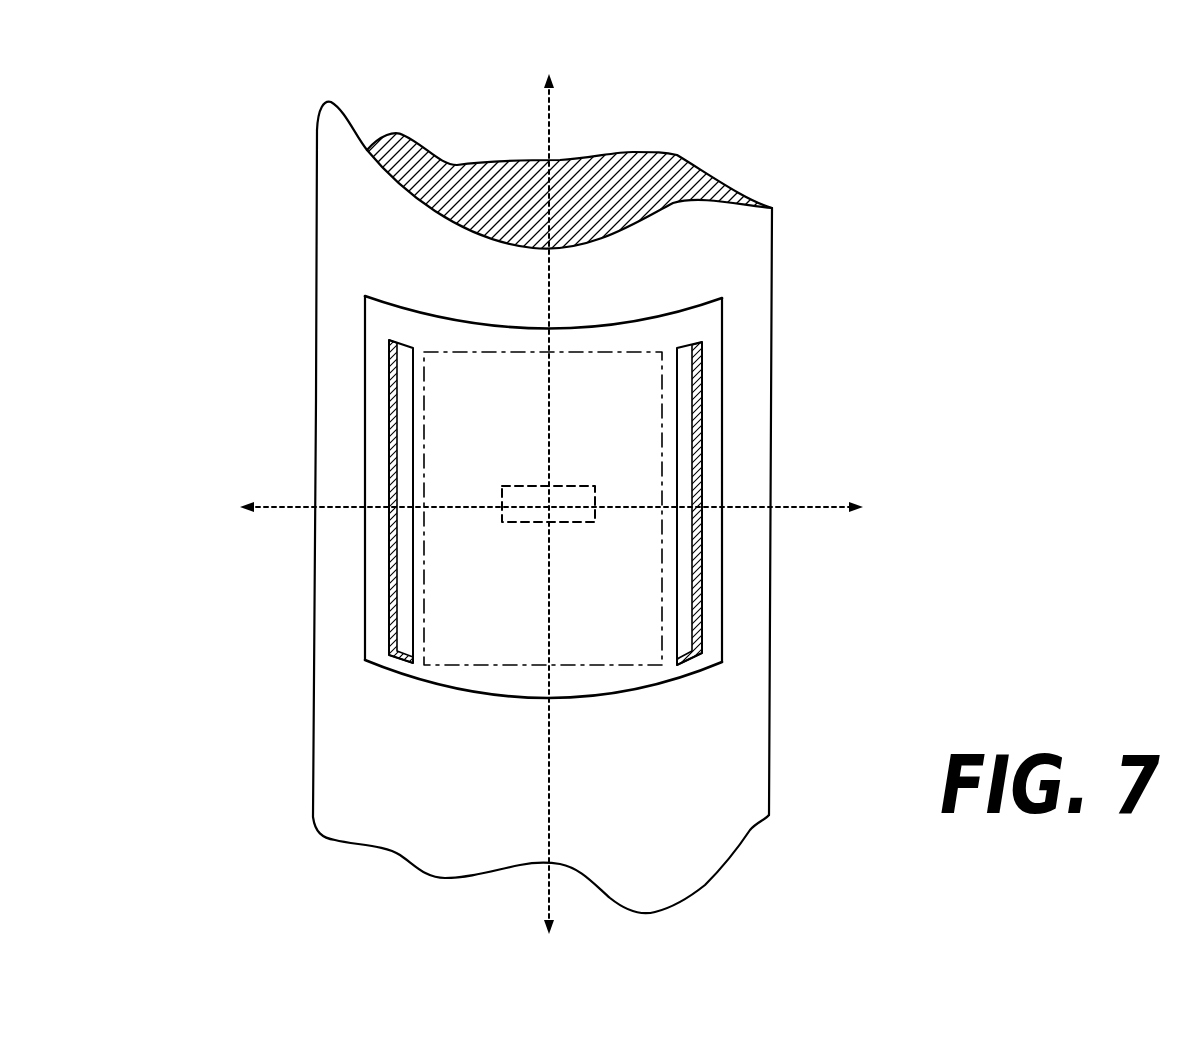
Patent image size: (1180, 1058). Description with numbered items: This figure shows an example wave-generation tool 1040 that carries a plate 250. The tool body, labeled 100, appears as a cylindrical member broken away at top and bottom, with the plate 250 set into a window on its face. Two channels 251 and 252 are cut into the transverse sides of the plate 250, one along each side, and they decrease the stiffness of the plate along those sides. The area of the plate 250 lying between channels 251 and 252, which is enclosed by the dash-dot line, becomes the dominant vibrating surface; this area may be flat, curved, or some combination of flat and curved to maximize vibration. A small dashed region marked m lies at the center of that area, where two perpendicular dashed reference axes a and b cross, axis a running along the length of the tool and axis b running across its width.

The wave-generation tool 1040 is at (546, 490).
The cylindrical body 100 is at (451, 282).
The plate 250 is at (708, 321).
The channel 251 is at (688, 454).
The channel 252 is at (399, 604).
The mark m is at (578, 482).
The axis a is at (550, 490).
The axis b is at (574, 502).